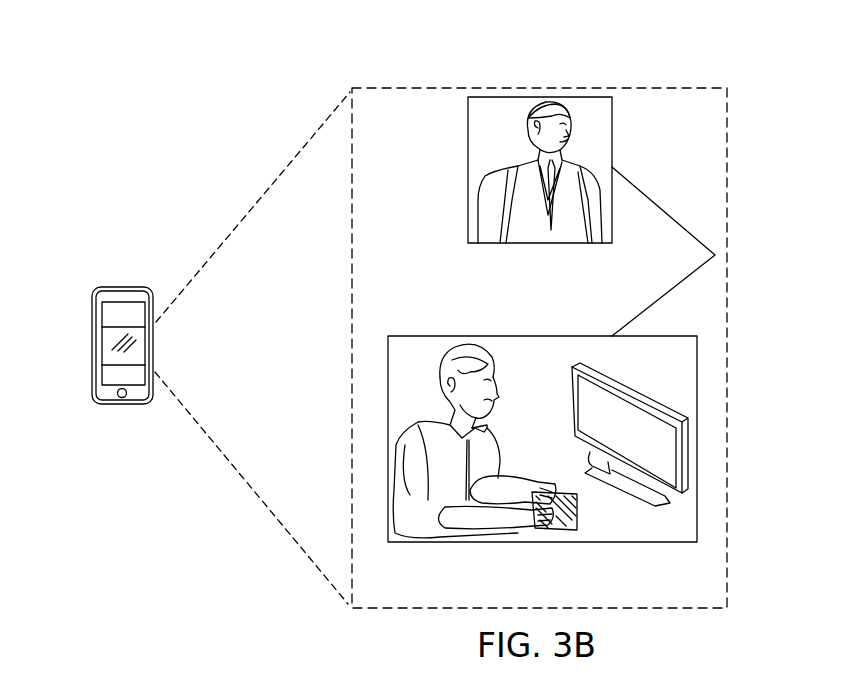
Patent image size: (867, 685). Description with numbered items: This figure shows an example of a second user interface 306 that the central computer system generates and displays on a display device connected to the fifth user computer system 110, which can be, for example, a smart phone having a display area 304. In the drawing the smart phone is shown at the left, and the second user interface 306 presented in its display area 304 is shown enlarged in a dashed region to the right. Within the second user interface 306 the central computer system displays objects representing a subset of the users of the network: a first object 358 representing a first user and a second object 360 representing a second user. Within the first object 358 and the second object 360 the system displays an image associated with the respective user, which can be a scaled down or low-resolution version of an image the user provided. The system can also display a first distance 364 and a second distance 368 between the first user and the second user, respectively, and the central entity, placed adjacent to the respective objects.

The fifth user computer system 110 is at (122, 286).
The display area 304 is at (97, 337).
The second user interface 306 is at (540, 83).
The first object 358 is at (582, 98).
The second object 360 is at (608, 527).
The first distance 364 is at (596, 288).
The second distance 368 is at (596, 589).